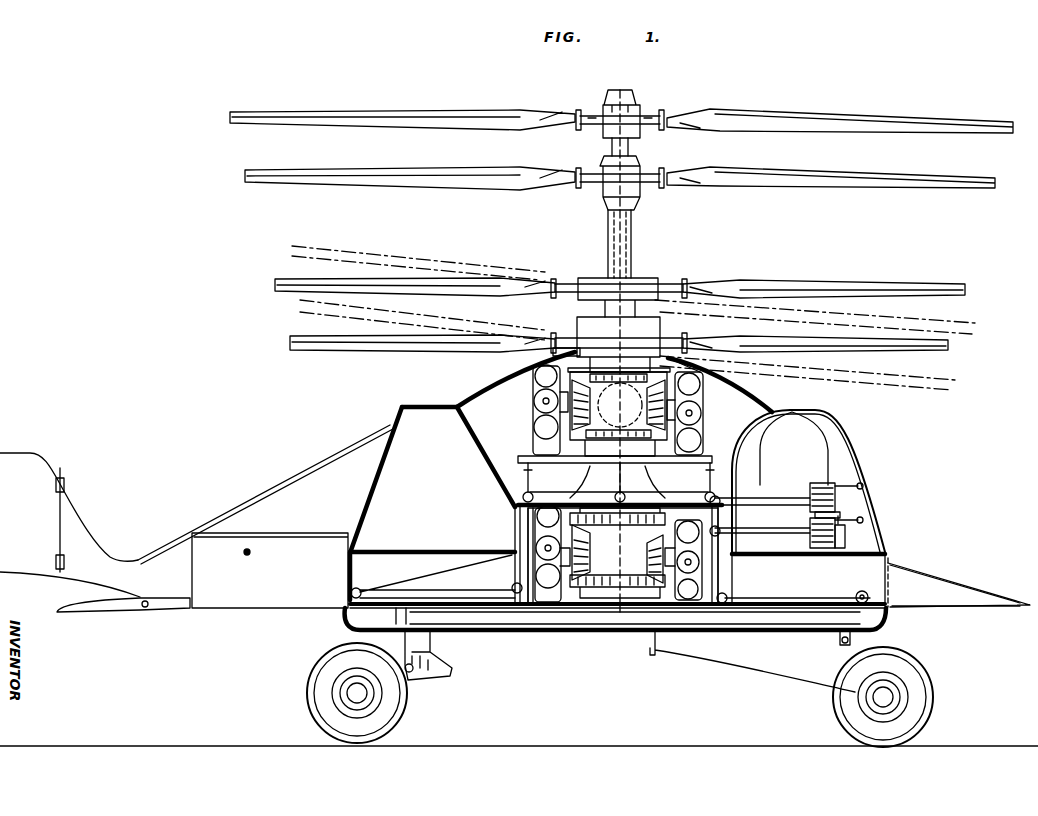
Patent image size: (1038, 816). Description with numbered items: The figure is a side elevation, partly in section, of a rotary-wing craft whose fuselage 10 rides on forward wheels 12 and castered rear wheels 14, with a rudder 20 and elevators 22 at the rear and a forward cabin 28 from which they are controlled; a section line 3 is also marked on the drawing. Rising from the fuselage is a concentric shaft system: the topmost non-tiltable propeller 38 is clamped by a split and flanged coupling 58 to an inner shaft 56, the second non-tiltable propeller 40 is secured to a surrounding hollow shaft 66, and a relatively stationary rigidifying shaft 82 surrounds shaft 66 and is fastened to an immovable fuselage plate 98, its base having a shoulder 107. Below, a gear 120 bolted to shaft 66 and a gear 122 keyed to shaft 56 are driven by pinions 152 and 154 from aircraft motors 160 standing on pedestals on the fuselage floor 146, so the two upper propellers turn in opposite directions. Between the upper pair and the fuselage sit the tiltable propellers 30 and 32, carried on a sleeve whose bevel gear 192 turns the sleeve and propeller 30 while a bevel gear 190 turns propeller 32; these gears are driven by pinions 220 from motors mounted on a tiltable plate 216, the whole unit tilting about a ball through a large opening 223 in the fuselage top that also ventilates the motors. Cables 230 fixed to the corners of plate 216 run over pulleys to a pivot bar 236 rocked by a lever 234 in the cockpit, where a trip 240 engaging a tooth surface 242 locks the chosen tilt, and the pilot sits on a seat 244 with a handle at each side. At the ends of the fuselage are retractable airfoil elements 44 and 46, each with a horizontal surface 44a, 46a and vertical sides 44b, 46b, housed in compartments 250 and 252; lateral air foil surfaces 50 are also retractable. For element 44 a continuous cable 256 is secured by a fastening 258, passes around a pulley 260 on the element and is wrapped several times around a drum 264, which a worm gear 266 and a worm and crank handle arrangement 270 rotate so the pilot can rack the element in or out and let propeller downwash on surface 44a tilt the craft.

The section line 3- 3 is at (620, 55).
The fuselage 10 is at (432, 403).
The forward wheels 12 is at (935, 665).
The castered rear wheels 14 is at (415, 720).
The rudder 20 is at (50, 468).
The elevators 22 is at (125, 612).
The forward cabin 28 is at (830, 440).
The tiltable propeller 30 is at (965, 286).
The tiltable propeller 32 is at (948, 345).
The non-tiltable propeller 38 is at (1010, 116).
The non-tiltable propeller 40 is at (1000, 176).
The fore and aft retractable airfoil element 44 is at (996, 585).
The horizontal surface 44a is at (945, 592).
The vertical side 44b is at (950, 585).
The fore and aft retractable airfoil element 46 is at (410, 578).
The horizontal surface 46a is at (478, 578).
The vertical side 46b is at (470, 548).
The retractable laterally disposed air foil surface 50 is at (403, 632).
The shaft 56 is at (632, 148).
The split and flanged coupling 58 is at (648, 114).
The shaft 66 is at (640, 204).
The rigidifying shaft 82 is at (632, 256).
The plate 98 is at (690, 510).
The shoulder 107 is at (490, 382).
The gear 120 is at (648, 524).
The gear 122 is at (604, 566).
The fuselage floor 146 is at (590, 612).
The pinion 152 is at (592, 550).
The pinion 154 is at (648, 568).
The air craft motor 160 is at (536, 454).
The bevel gear 190 is at (705, 375).
The bevel gear 192 is at (570, 438).
The plate 216 is at (595, 468).
The pinion 220 is at (545, 424).
The opening 223 is at (570, 354).
The cable 230 is at (532, 486).
The lever 234 is at (812, 490).
The pivot bar 236 is at (790, 500).
The trip 240 is at (815, 482).
The tooth surface 242 is at (812, 540).
The seat 244 is at (800, 528).
The compartment 250 is at (790, 576).
The compartment 252 is at (346, 574).
The cable 256 is at (796, 596).
The fastening 258 is at (858, 594).
The pulley 260 is at (895, 618).
The drum 264 is at (838, 530).
The worm gear 266 is at (840, 508).
The worm and crank handle arrangement 270 is at (848, 520).